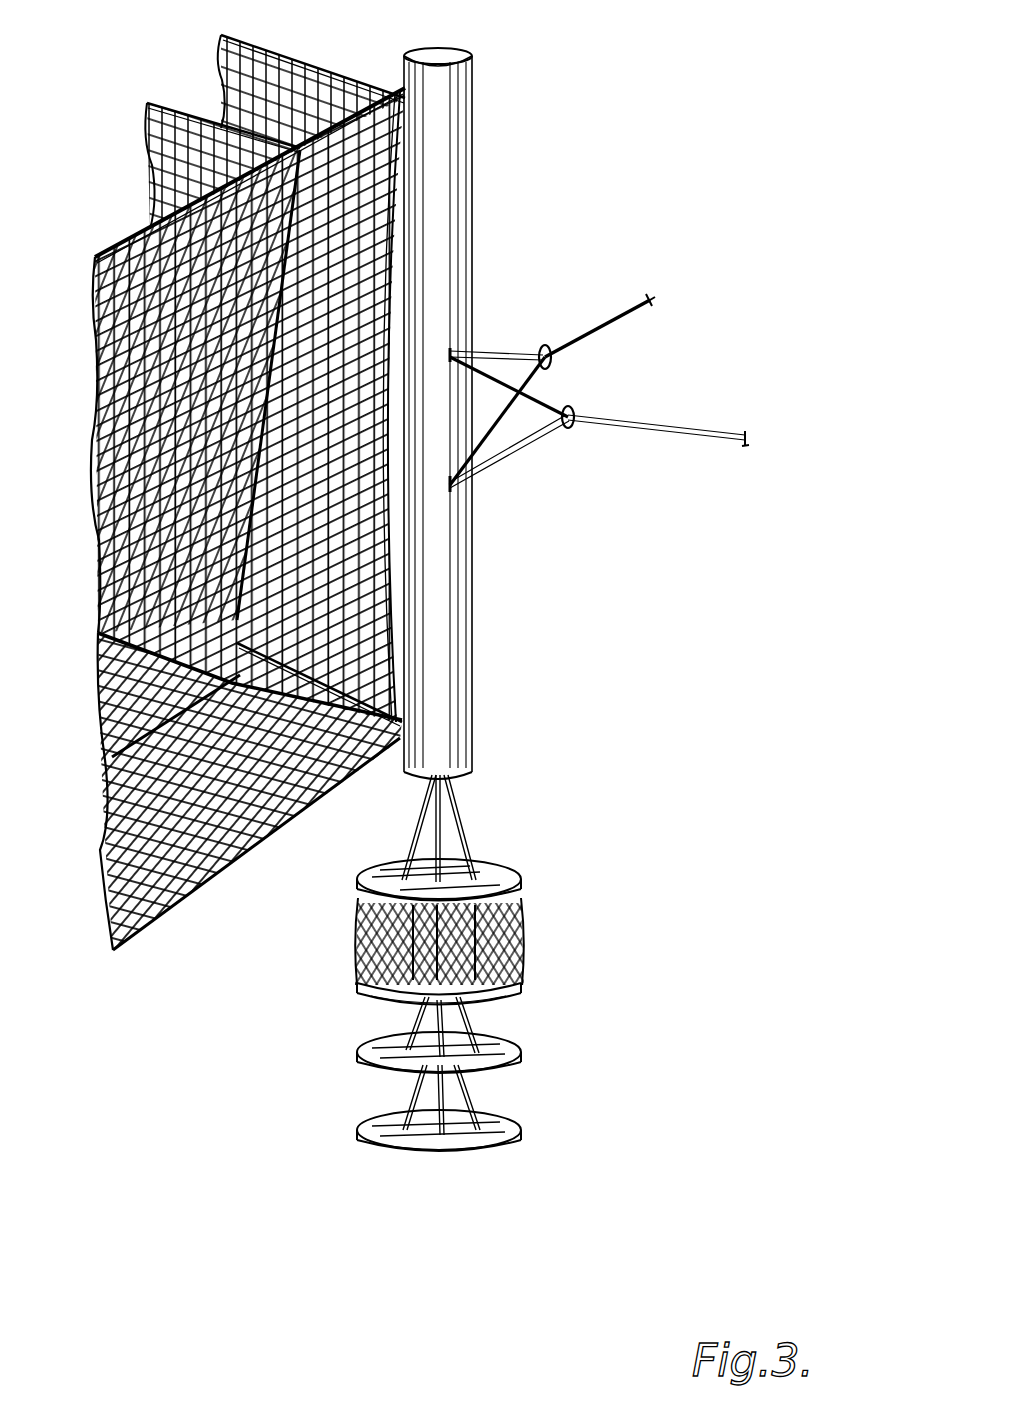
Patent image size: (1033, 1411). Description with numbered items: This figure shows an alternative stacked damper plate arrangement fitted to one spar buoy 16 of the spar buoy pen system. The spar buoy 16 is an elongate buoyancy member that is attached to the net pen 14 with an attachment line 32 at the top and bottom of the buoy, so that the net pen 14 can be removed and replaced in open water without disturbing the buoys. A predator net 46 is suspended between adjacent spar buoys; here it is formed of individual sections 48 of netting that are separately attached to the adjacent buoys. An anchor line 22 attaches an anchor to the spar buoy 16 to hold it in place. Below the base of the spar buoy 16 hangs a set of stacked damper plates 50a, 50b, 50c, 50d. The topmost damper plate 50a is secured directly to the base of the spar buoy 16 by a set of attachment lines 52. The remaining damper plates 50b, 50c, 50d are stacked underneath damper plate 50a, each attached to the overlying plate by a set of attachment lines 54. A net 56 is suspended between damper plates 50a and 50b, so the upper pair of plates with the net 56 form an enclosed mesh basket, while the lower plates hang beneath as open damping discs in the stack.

The net pen 14 is at (136, 166).
The spar buoy 16 is at (484, 198).
The anchor line 22 is at (620, 313).
The attachment line 32 is at (335, 152).
The predator net 46 is at (198, 64).
The section of netting 48 is at (291, 53).
The damper plate 50a is at (498, 866).
The damper plate 50b is at (503, 990).
The damper plate 50c is at (500, 1078).
The damper plate 50d is at (510, 1147).
The attachment lines 52 is at (470, 852).
The attachment lines 54 is at (442, 1028).
The net 56 is at (528, 933).